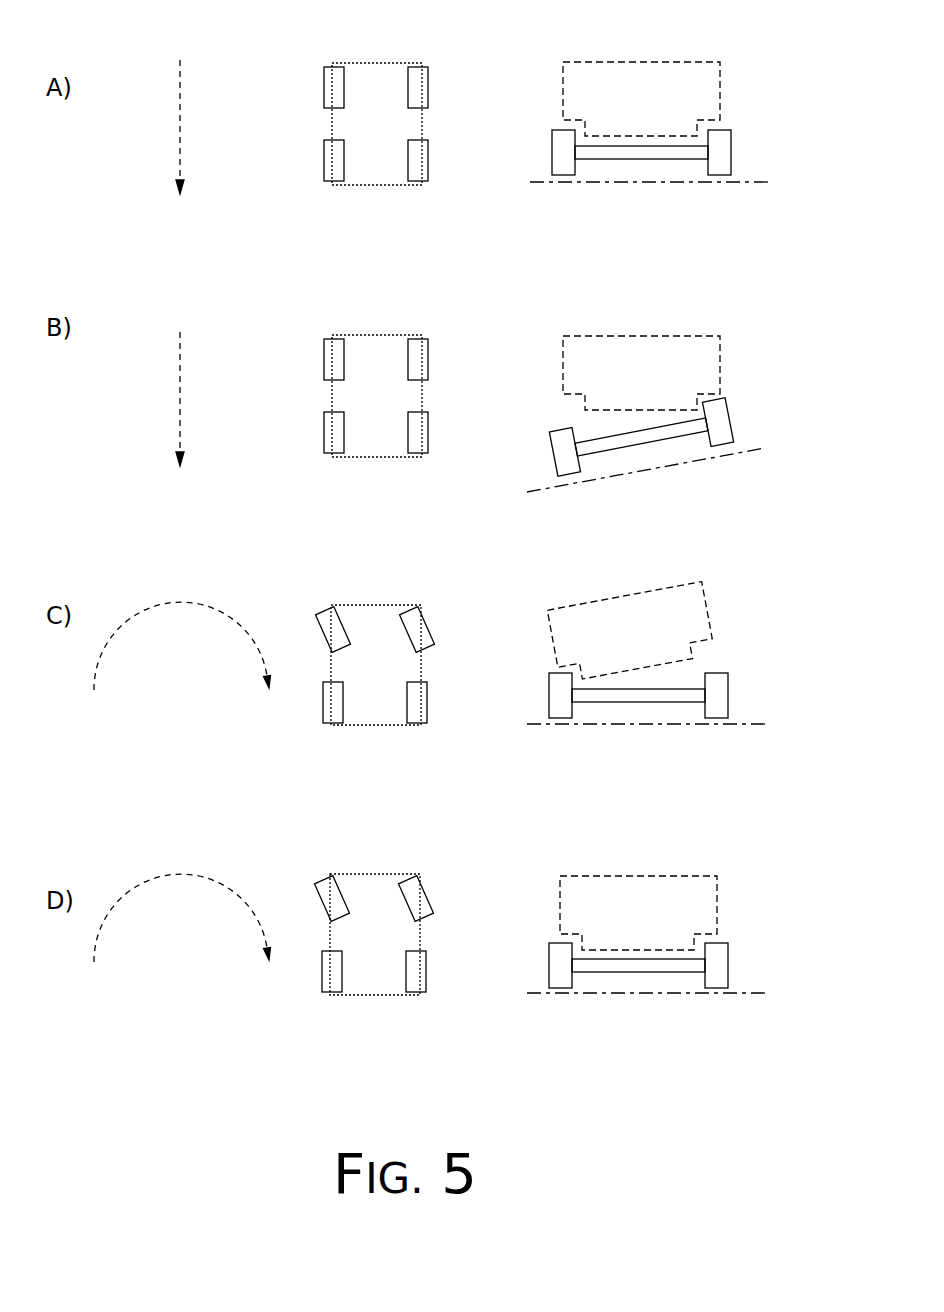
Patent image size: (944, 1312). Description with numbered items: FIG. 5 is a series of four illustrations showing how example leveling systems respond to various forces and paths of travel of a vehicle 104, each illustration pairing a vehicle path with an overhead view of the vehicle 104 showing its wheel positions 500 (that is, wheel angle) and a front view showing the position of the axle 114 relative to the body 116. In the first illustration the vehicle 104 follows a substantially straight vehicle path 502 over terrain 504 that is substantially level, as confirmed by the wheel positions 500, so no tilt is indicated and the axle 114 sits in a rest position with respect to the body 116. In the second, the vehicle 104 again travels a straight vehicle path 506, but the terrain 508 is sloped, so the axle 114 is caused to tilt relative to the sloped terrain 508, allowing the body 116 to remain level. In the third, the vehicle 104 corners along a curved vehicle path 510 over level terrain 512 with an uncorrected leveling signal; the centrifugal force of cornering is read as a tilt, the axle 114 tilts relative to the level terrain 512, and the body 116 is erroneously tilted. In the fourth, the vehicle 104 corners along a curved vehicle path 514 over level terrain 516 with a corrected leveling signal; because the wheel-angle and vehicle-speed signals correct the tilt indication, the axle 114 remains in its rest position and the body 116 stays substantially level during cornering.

The vehicle 104 is at (571, 505).
The axle 114 is at (731, 139).
The body 116 is at (720, 80).
The wheel positions 500 is at (434, 67).
The vehicle path 502 is at (181, 85).
The terrain 504 is at (737, 180).
The vehicle path 506 is at (225, 394).
The terrain 508 is at (747, 453).
The vehicle path 510 is at (215, 610).
The terrain 512 is at (737, 725).
The vehicle path 514 is at (201, 904).
The terrain 516 is at (737, 993).